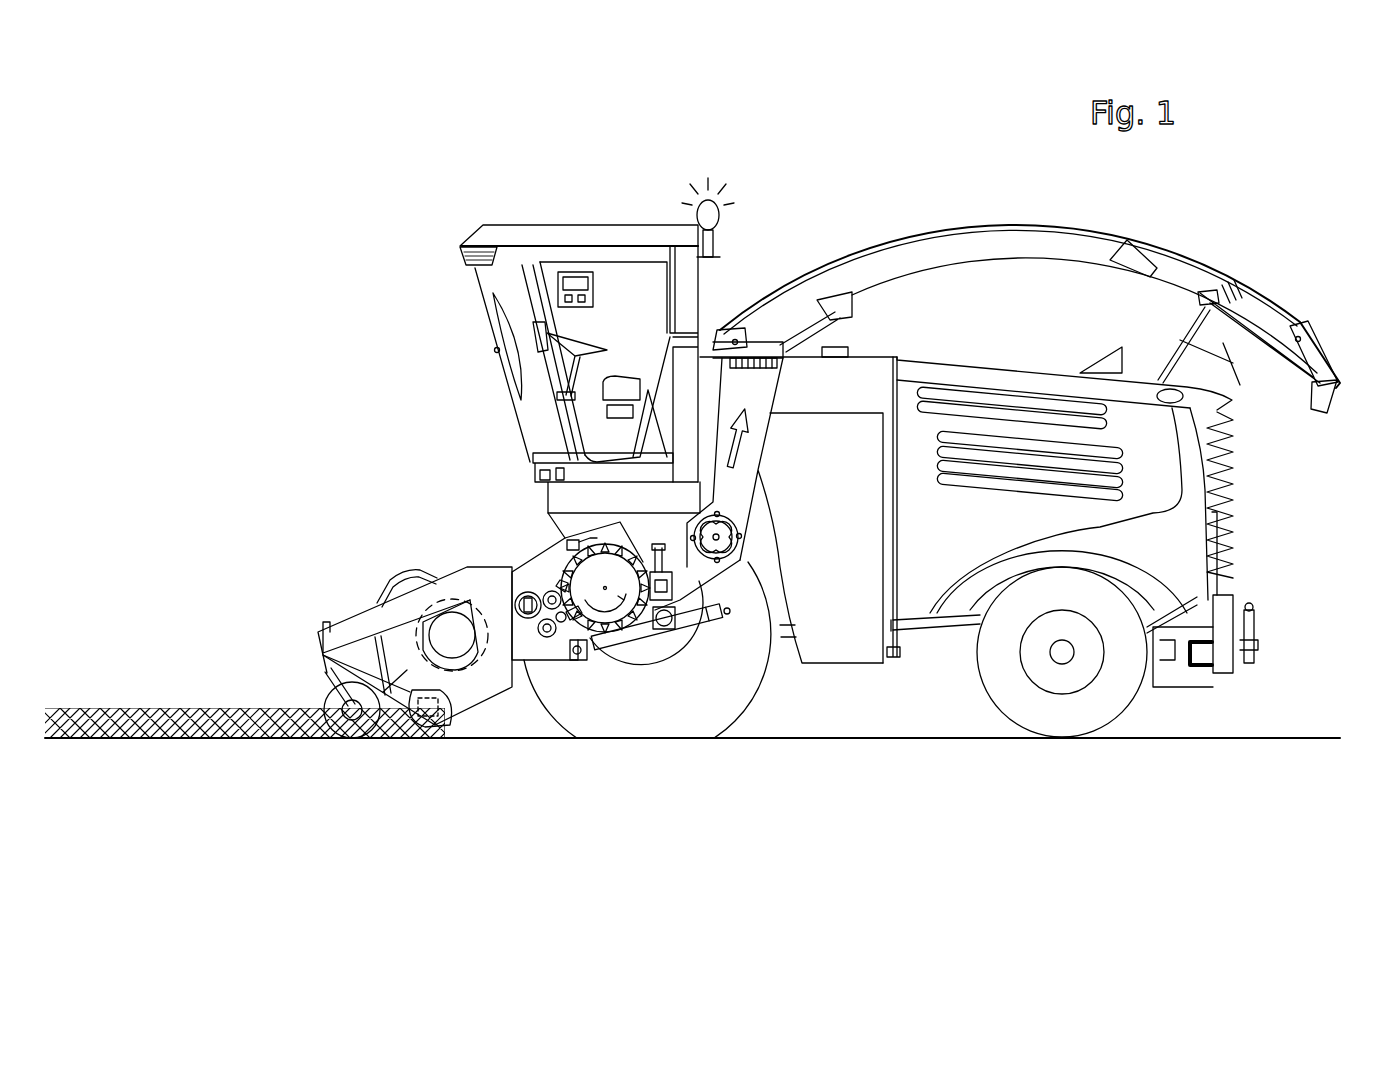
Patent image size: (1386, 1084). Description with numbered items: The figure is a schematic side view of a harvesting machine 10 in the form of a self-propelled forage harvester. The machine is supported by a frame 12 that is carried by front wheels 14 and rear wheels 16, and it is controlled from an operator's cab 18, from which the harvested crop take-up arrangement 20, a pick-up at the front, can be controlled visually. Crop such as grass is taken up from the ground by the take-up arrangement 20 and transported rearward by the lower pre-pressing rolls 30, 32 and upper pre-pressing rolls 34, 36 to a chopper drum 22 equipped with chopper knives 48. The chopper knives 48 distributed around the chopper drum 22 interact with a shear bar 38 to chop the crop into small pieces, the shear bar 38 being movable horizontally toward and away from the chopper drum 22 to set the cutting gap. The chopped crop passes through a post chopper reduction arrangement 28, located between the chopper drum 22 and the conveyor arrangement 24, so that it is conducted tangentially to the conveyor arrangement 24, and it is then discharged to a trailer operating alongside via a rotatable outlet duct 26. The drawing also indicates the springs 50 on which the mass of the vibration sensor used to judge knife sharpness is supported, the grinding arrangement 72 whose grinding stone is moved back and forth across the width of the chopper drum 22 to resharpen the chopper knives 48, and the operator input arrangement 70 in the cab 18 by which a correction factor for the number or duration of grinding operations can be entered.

The harvesting machine 10 is at (235, 375).
The frame 12 is at (927, 625).
The front wheels 14 is at (582, 718).
The rear wheels 16 is at (1117, 698).
The operator's cab 18 is at (488, 302).
The harvested crop take-up arrangement 20 is at (298, 582).
The chopper drum 22 is at (614, 615).
The conveyor arrangement 24 is at (720, 545).
The outlet duct 26 is at (995, 240).
The post chopper reduction arrangement 28 is at (700, 590).
The lower pre-pressing roll 30 is at (565, 640).
The lower pre-pressing roll 32 is at (548, 640).
The upper pre-pressing roll 34 is at (545, 597).
The upper pre-pressing roll 36 is at (553, 590).
The shear bar 38 is at (603, 615).
The chopper knives 48 is at (568, 541).
The springs 50 is at (528, 660).
The operator input arrangement 70 is at (593, 288).
The grinding arrangement 72 is at (553, 595).